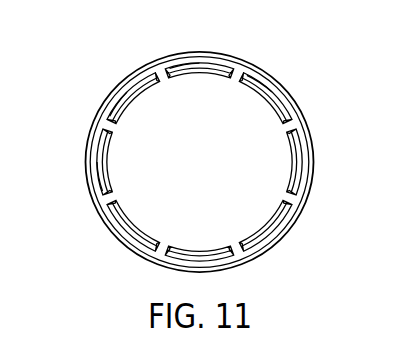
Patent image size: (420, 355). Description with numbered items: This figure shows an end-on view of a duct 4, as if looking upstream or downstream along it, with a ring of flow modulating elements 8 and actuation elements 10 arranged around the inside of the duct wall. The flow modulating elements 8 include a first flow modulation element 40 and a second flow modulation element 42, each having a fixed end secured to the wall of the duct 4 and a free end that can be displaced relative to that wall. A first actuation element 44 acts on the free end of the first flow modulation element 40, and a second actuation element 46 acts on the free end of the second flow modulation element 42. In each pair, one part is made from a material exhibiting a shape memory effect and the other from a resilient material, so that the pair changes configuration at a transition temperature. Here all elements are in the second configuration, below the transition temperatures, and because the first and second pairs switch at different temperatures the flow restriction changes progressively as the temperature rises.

The duct 4 is at (311, 117).
The flow modulating elements 8 is at (120, 78).
The actuation elements 10 is at (218, 56).
The first flow modulation element 40 is at (141, 66).
The second flow modulation element 42 is at (195, 58).
The first actuation element 44 is at (110, 93).
The second actuation element 46 is at (236, 62).